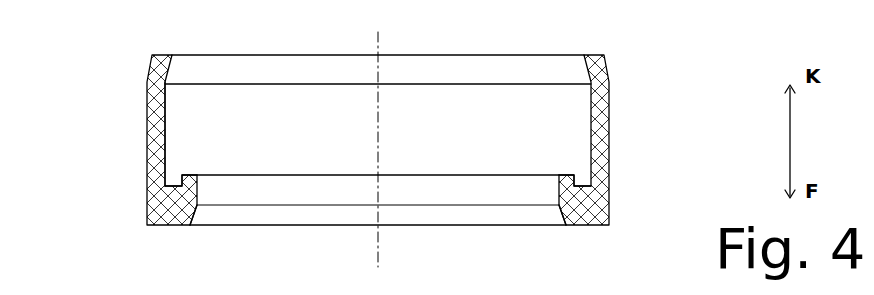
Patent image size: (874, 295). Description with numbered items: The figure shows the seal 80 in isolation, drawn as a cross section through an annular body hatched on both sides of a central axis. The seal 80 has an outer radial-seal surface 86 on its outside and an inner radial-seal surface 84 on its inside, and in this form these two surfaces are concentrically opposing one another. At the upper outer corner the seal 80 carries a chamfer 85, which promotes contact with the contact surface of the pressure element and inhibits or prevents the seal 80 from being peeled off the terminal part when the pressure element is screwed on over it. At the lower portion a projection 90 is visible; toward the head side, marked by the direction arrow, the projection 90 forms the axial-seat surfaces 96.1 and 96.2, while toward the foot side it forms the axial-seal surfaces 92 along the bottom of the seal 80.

The seal 80 is at (130, 50).
The inner radial-seal surface 84 is at (170, 145).
The chamfer 85 is at (605, 65).
The outer radial-seal surface 86 is at (147, 137).
The projection 90 is at (187, 205).
The axial-seal surfaces 92 is at (168, 235).
The axial-seat surface 96.1 is at (188, 163).
The axial-seat surface 96.2 is at (586, 173).